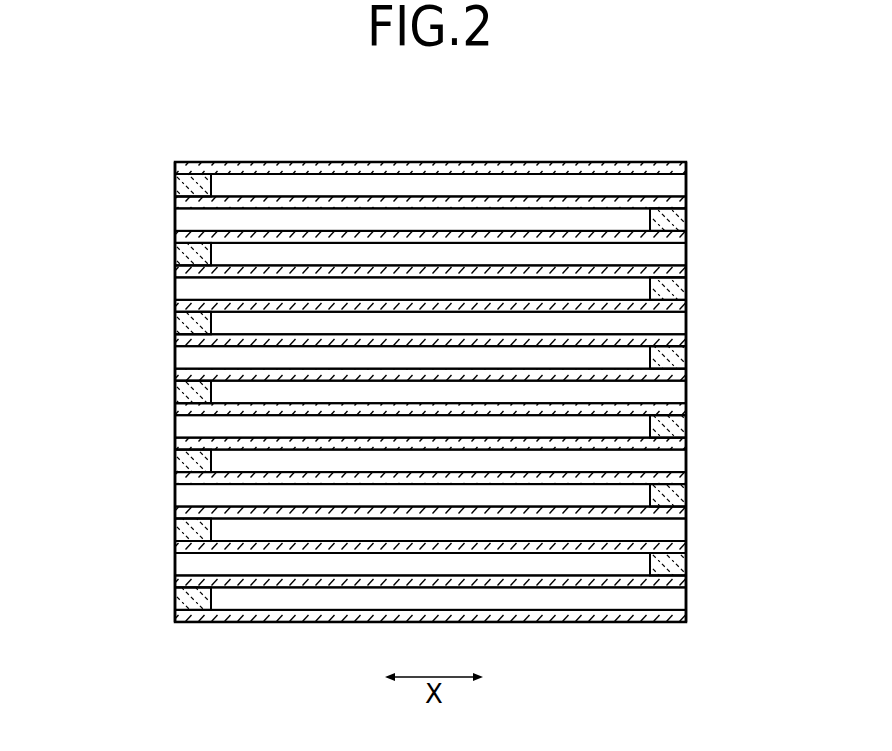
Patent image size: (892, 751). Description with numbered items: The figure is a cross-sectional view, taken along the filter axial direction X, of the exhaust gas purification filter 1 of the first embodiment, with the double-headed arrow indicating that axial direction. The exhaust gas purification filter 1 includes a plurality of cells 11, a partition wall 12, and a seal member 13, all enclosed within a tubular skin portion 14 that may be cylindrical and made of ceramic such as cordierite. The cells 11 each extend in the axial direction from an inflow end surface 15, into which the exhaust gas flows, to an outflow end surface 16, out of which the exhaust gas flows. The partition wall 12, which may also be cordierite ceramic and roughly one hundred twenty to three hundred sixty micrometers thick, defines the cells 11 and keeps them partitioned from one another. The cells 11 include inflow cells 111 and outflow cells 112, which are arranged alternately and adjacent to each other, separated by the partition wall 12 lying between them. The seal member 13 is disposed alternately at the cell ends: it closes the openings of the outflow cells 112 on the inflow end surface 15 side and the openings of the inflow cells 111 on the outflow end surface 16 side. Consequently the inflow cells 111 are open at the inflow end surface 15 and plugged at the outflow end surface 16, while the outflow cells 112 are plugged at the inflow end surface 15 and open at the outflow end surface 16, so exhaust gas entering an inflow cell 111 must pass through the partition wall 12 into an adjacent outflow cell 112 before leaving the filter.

The exhaust gas purification filter 1 is at (550, 130).
The cells 11 is at (72, 343).
The inflow cells 111 is at (197, 357).
The outflow cells 112 is at (233, 392).
The partition wall 12 is at (615, 377).
The seal member 13 is at (185, 254).
The skin portion 14 is at (627, 163).
The inflow end surface 15 is at (175, 511).
The outflow end surface 16 is at (686, 473).